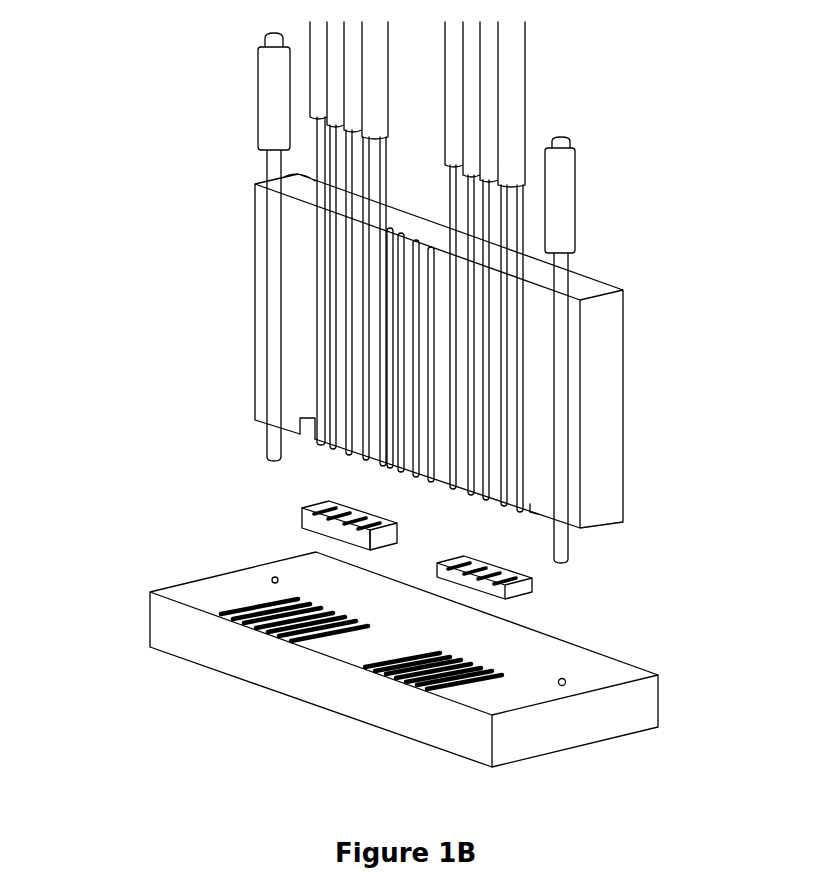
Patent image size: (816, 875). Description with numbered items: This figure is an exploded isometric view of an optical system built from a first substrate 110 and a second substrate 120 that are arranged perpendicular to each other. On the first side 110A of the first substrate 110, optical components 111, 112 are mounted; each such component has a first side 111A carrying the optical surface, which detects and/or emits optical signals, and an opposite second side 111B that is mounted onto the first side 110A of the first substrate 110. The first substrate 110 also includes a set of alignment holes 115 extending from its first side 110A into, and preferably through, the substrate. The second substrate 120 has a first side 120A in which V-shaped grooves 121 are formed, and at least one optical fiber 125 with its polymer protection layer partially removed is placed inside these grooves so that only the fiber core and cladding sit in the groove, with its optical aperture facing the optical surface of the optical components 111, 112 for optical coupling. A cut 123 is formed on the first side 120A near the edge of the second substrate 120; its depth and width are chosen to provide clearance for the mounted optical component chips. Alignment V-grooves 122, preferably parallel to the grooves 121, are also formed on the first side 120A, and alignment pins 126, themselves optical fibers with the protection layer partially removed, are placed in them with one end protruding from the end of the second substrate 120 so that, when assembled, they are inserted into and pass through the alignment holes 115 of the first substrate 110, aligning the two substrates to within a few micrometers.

The first substrate 110 is at (355, 630).
The first side of the first substrate 110A is at (207, 610).
The optical component 111 is at (296, 485).
The first side of the optical component 111A is at (364, 516).
The second side of the optical component 111B is at (312, 546).
The optical component 112 is at (533, 582).
The alignment holes 115 is at (275, 579).
The second substrate 120 is at (615, 367).
The first side of the second substrate 120A is at (301, 293).
The V-shaped groove 121 is at (388, 272).
The alignment V-grooves 122 is at (264, 422).
The cut 123 is at (535, 511).
The optical fiber 125 is at (322, 160).
The alignment pins 126 is at (557, 283).